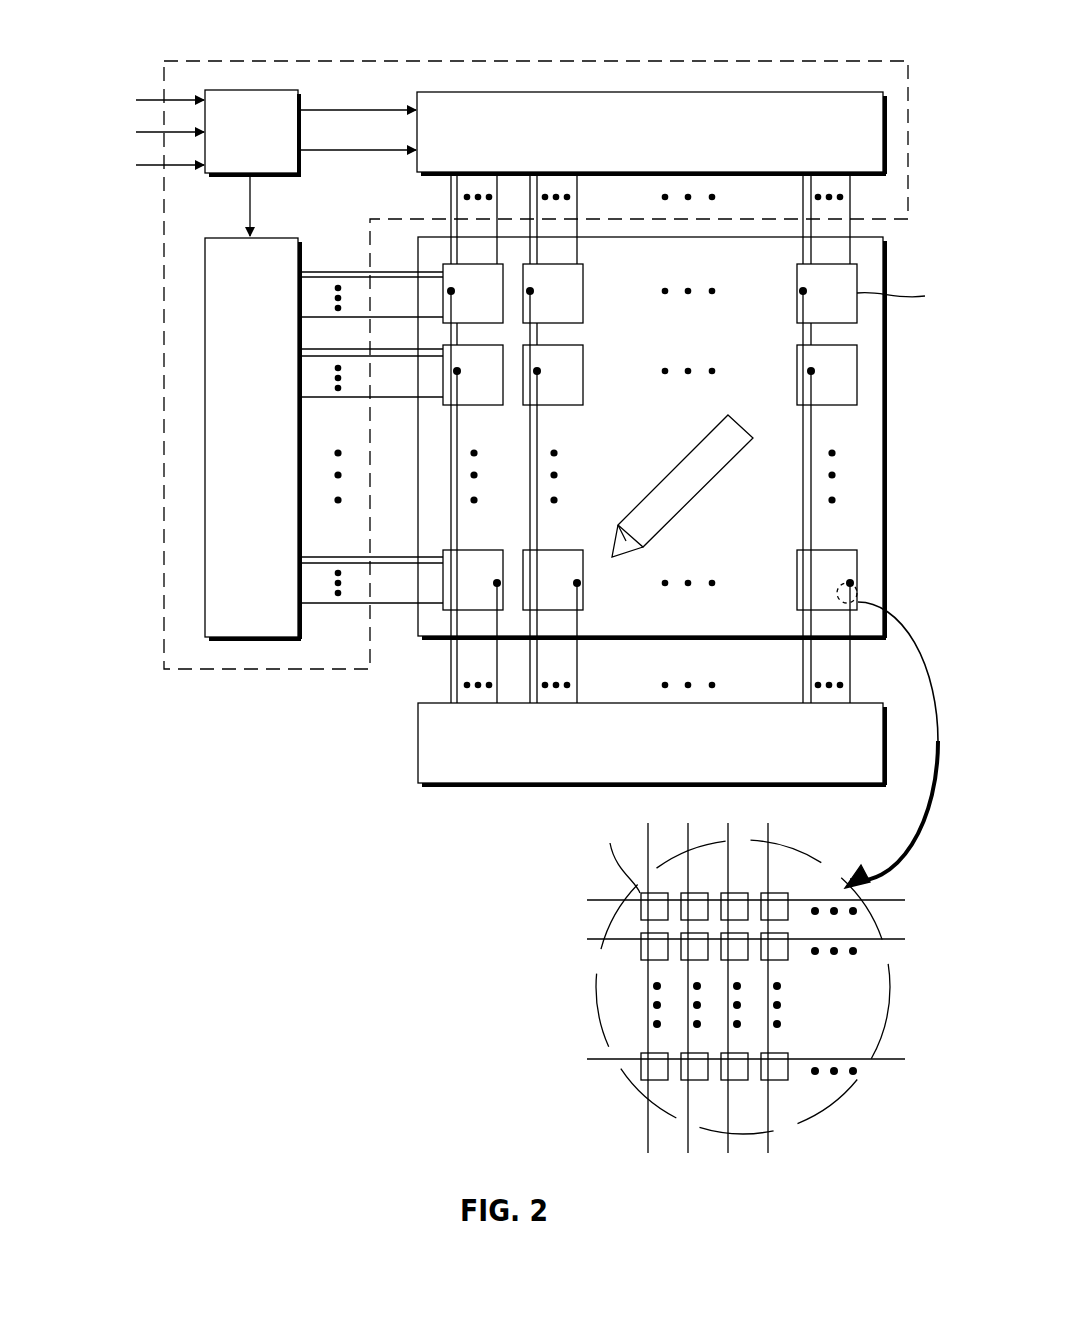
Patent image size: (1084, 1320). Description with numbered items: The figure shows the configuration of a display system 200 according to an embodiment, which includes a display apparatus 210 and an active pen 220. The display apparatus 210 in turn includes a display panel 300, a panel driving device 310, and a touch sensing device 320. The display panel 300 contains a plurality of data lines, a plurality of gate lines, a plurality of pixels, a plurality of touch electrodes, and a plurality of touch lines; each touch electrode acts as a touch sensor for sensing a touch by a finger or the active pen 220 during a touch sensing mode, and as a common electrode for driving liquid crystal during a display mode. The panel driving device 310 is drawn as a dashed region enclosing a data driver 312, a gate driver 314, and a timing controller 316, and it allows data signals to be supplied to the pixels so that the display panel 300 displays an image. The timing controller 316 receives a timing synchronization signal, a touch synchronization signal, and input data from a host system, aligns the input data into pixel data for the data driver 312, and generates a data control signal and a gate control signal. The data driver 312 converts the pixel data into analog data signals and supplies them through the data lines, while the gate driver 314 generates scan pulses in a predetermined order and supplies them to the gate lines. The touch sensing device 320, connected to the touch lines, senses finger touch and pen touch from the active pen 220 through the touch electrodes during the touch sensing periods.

The display system 200 is at (78, 40).
The display apparatus 210 is at (445, 858).
The active pen 220 is at (680, 462).
The display panel 300 is at (418, 640).
The panel driving device 310 is at (260, 669).
The data driver 312 is at (668, 147).
The gate driver 314 is at (269, 487).
The timing controller 316 is at (269, 147).
The touch sensing device 320 is at (668, 760).